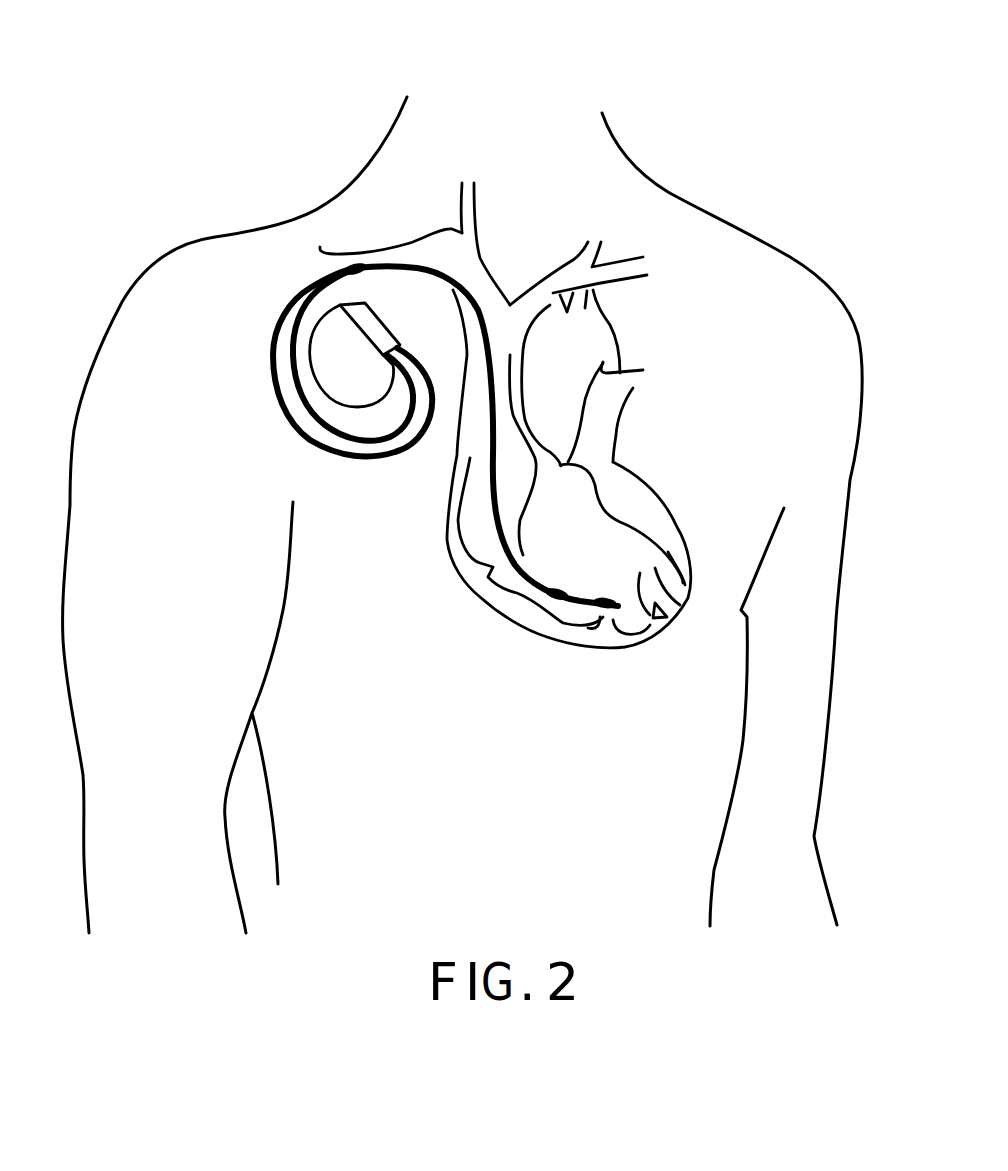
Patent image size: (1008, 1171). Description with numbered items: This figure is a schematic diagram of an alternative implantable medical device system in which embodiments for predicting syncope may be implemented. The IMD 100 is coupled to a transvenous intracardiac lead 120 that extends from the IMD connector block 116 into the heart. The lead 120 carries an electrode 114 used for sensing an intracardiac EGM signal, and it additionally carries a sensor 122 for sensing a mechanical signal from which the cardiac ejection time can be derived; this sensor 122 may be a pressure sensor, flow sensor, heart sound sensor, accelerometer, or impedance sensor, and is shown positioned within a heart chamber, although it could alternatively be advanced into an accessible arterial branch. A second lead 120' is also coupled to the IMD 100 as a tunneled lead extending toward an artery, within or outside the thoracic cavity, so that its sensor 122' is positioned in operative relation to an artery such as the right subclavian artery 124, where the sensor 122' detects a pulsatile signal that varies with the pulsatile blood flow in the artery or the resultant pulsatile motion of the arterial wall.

The IMD 100 is at (263, 327).
The electrode 114 is at (630, 606).
The IMD connector block 116 is at (366, 304).
The transvenous intracardiac lead 120 is at (445, 437).
The tunneled lead 120' is at (359, 406).
The sensor 122 is at (543, 648).
The sensor 122' is at (383, 235).
The right subclavian artery 124 is at (326, 252).